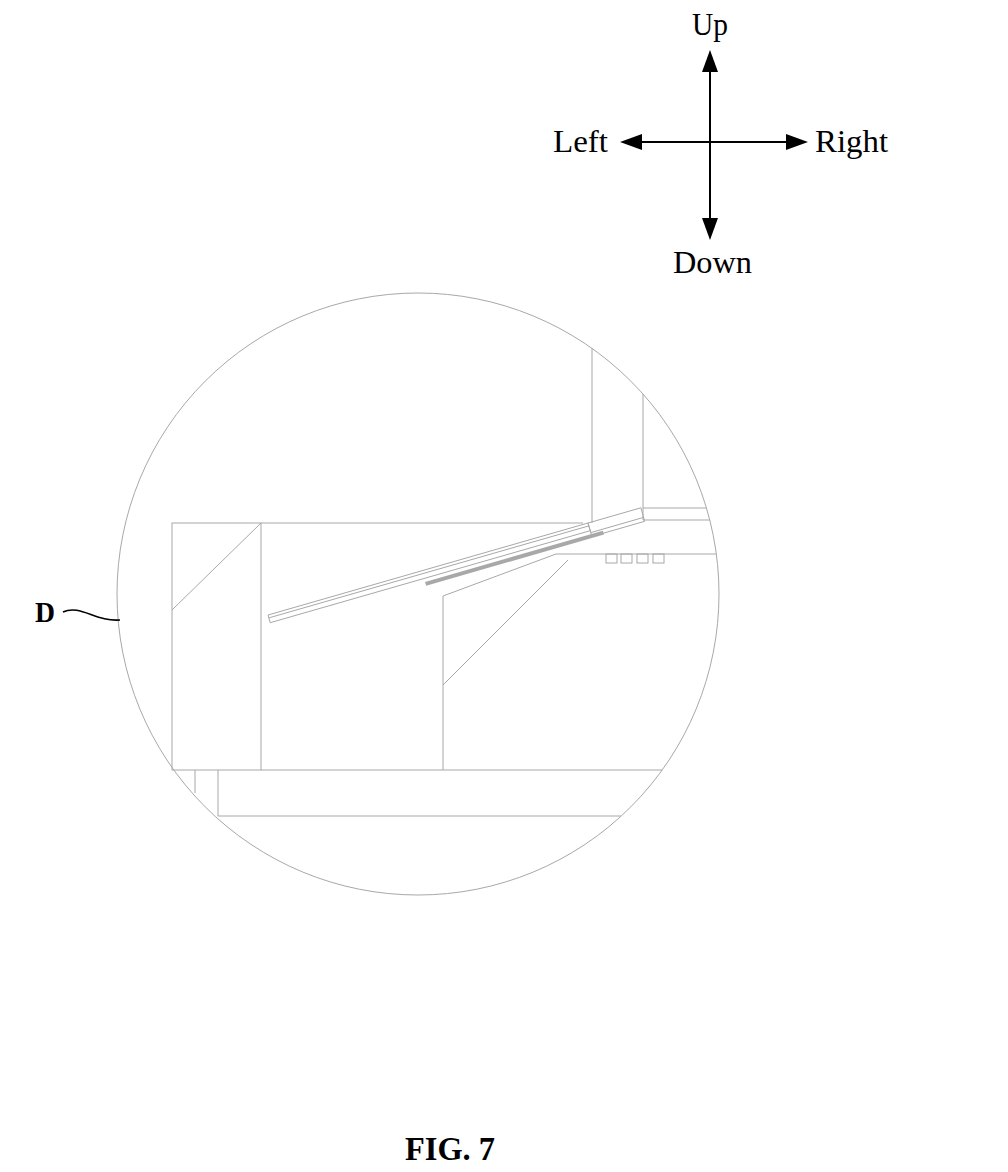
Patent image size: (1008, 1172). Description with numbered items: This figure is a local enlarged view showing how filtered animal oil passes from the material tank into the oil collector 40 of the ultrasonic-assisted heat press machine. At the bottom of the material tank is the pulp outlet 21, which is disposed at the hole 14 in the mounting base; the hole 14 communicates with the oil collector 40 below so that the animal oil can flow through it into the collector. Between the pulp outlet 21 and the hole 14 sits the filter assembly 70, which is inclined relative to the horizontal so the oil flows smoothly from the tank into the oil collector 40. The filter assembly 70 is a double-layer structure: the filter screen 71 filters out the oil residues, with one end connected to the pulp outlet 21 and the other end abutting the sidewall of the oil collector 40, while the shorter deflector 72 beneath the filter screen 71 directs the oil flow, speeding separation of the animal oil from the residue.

The hole 14 is at (290, 523).
The pulp outlet 21 is at (668, 482).
The oil collector 40 is at (292, 692).
The filter assembly 70 is at (456, 754).
The filter screen 71 is at (385, 588).
The deflector 72 is at (500, 567).